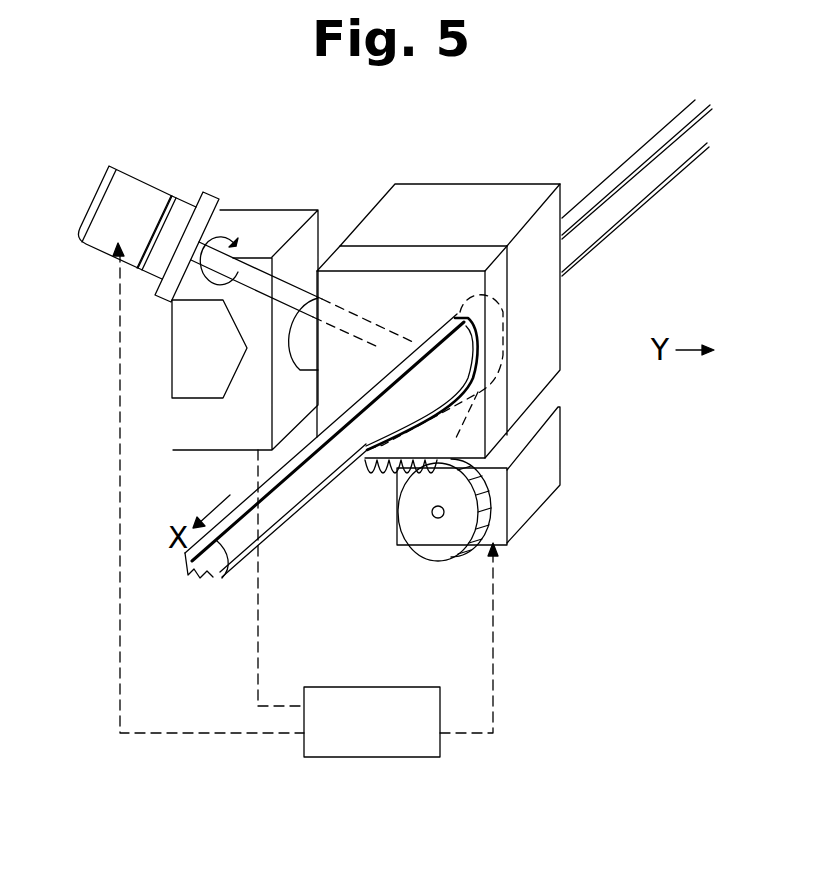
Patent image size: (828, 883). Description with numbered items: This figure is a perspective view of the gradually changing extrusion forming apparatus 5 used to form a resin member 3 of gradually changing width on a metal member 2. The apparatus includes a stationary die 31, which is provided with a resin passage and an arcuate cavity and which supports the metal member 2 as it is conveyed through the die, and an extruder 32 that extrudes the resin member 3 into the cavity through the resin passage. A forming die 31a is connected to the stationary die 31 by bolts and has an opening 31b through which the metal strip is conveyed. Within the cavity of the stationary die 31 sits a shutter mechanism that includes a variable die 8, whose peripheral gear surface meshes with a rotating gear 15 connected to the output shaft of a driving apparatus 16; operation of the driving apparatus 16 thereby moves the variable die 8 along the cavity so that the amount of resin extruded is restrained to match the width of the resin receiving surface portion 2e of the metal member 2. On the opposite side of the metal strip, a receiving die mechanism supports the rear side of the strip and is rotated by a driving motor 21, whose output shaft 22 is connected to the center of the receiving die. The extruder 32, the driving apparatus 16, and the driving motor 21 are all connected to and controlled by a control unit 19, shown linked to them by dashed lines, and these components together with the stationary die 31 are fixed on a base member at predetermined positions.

The metal member 2 is at (602, 262).
The resin receiving surface portion 2e is at (590, 227).
The resin member 3 is at (297, 498).
The gradually changing extrusion forming apparatus 5 is at (445, 178).
The variable die 8 is at (373, 480).
The rotating gear 15 is at (440, 542).
The driving apparatus 16 is at (535, 495).
The control unit 19 is at (383, 687).
The driving motor 21 is at (142, 192).
The output shaft 22 is at (293, 287).
The stationary die 31 is at (480, 217).
The forming die 31a is at (392, 260).
The opening 31b is at (483, 342).
The extruder 32 is at (253, 218).